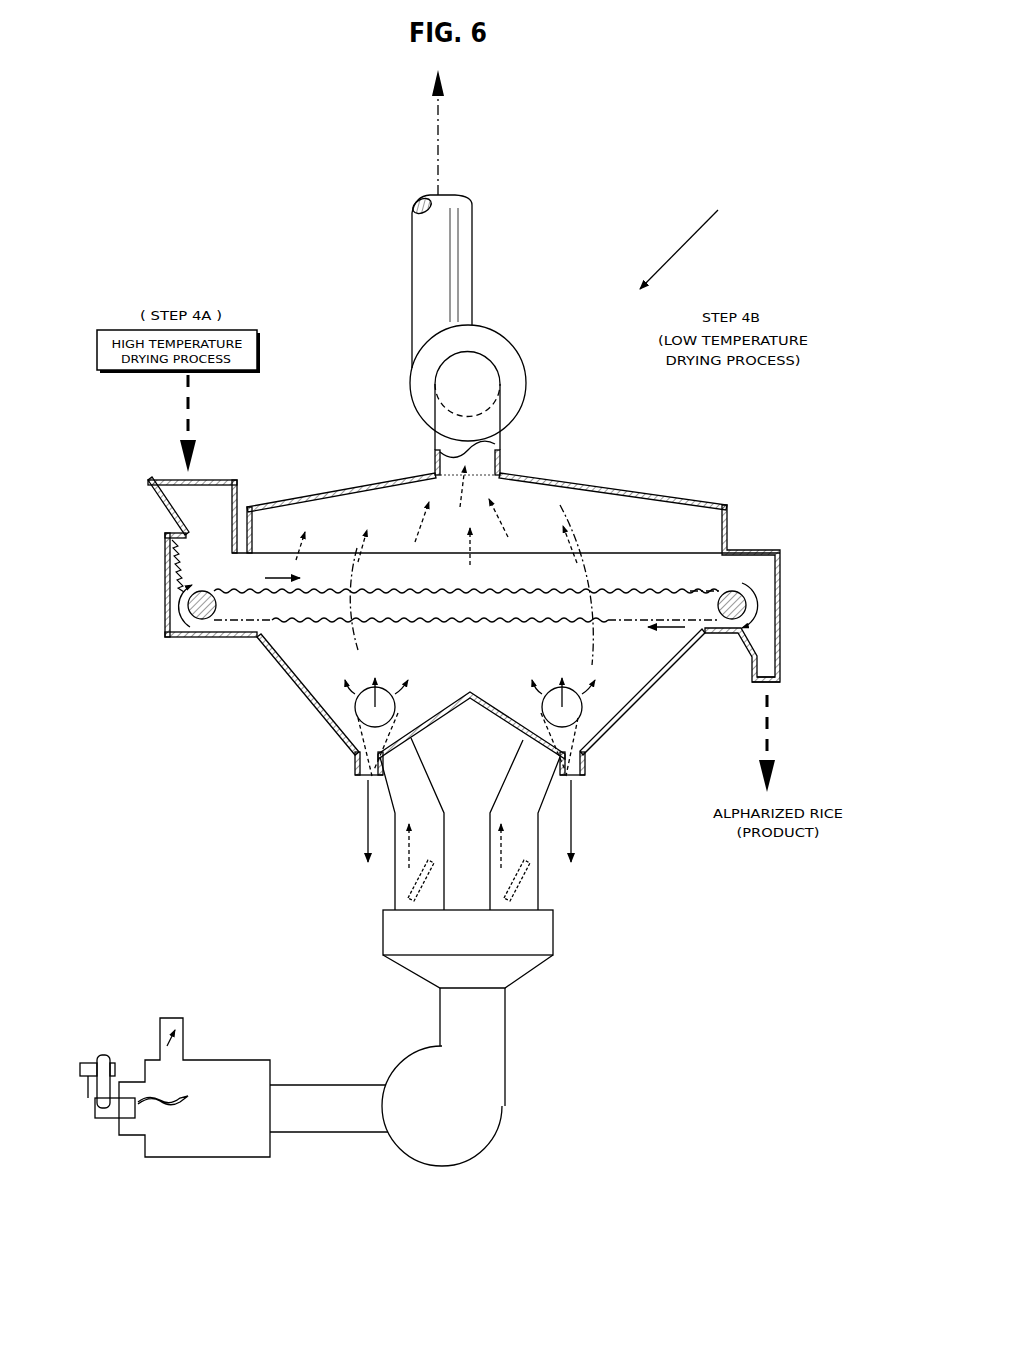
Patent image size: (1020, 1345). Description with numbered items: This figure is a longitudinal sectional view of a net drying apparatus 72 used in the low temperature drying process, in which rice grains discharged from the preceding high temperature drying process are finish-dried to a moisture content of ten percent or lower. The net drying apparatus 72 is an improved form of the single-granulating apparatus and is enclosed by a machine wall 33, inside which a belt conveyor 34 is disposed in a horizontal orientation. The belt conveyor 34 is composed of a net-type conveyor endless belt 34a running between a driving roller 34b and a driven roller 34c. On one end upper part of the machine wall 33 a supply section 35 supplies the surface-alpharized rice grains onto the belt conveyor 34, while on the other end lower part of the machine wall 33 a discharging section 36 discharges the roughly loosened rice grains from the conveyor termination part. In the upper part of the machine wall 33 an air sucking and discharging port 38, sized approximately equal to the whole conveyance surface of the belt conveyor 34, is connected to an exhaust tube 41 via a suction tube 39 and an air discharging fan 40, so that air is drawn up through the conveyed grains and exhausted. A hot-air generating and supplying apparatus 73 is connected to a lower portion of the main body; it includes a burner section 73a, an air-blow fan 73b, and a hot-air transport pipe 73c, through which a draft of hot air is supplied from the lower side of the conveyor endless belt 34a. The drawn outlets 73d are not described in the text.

The net drying apparatus 72 is at (738, 204).
The exhaust tube 41 is at (418, 284).
The air discharging fan 40 is at (432, 378).
The supply section 35 is at (180, 485).
The air sucking and discharging port 38 is at (322, 548).
The suction tube 39 is at (565, 483).
The machine wall 33 is at (755, 553).
The discharging section 36 is at (766, 648).
The belt conveyor 34 is at (597, 575).
The conveyor endless belt 34a is at (606, 592).
The driving roller 34b is at (204, 613).
The driven roller 34c is at (762, 601).
The hot-air generating and supplying apparatus 73 is at (285, 940).
The burner section 73a is at (222, 1062).
The air-blow fan 73b is at (473, 1135).
The hot-air transport pipe 73c is at (395, 891).
The air nozzle 73d is at (360, 715).